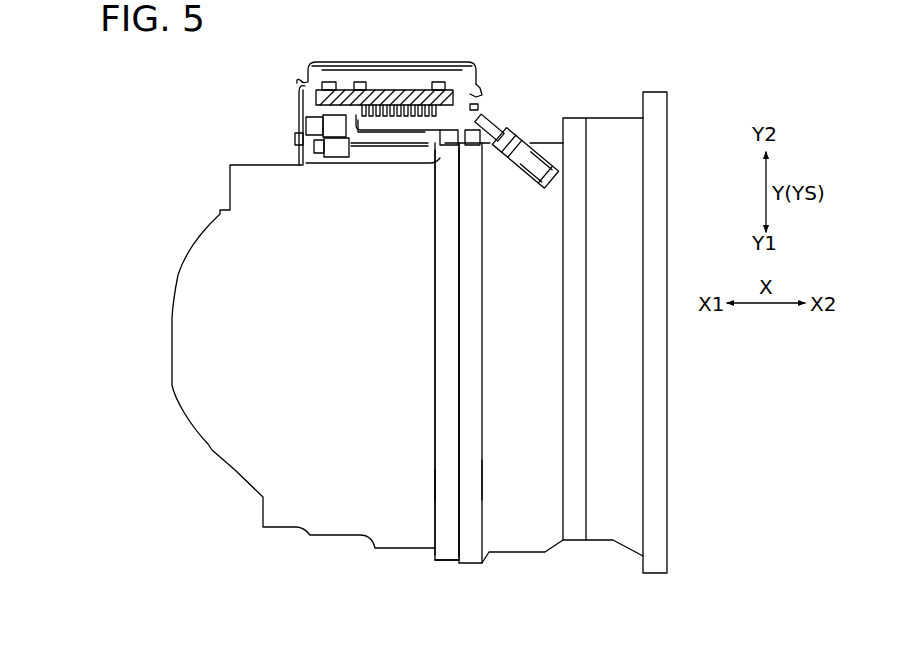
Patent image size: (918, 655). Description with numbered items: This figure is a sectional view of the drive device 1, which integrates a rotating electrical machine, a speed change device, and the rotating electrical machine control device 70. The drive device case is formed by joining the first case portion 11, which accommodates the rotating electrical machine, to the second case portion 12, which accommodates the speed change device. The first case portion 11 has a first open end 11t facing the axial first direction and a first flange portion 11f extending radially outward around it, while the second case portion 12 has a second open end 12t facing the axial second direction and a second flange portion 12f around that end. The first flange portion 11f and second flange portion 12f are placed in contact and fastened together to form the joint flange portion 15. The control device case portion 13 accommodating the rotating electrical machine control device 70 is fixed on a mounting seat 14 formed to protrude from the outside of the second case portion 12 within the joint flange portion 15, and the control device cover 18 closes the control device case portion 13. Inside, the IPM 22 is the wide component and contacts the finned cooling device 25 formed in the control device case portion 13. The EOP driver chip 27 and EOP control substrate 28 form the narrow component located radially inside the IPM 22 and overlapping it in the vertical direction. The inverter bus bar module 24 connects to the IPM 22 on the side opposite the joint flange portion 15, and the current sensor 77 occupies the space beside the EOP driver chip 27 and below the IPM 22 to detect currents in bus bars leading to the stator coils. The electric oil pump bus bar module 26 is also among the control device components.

The drive device 1 is at (138, 160).
The rotating electrical machine control device 70 is at (223, 132).
The control device cover 18 is at (306, 70).
The control device case portion 13 is at (299, 93).
The inverter bus bar module 24 is at (305, 115).
The current sensor 77 is at (297, 126).
The IPM 22 is at (448, 94).
The mounting seat 14 is at (481, 92).
The first case portion 11 is at (543, 143).
The electric oil pump bus bar module 26 is at (337, 163).
The cooling device 25 is at (357, 156).
The EOP driver chip 27 is at (393, 121).
The EOP control substrate 28 is at (435, 145).
The second case portion 12 is at (183, 318).
The first open end 11t is at (456, 331).
The second open end 12t is at (461, 365).
The first flange portion 11f is at (480, 473).
The second flange portion 12f is at (437, 485).
The joint flange portion 15 is at (460, 567).